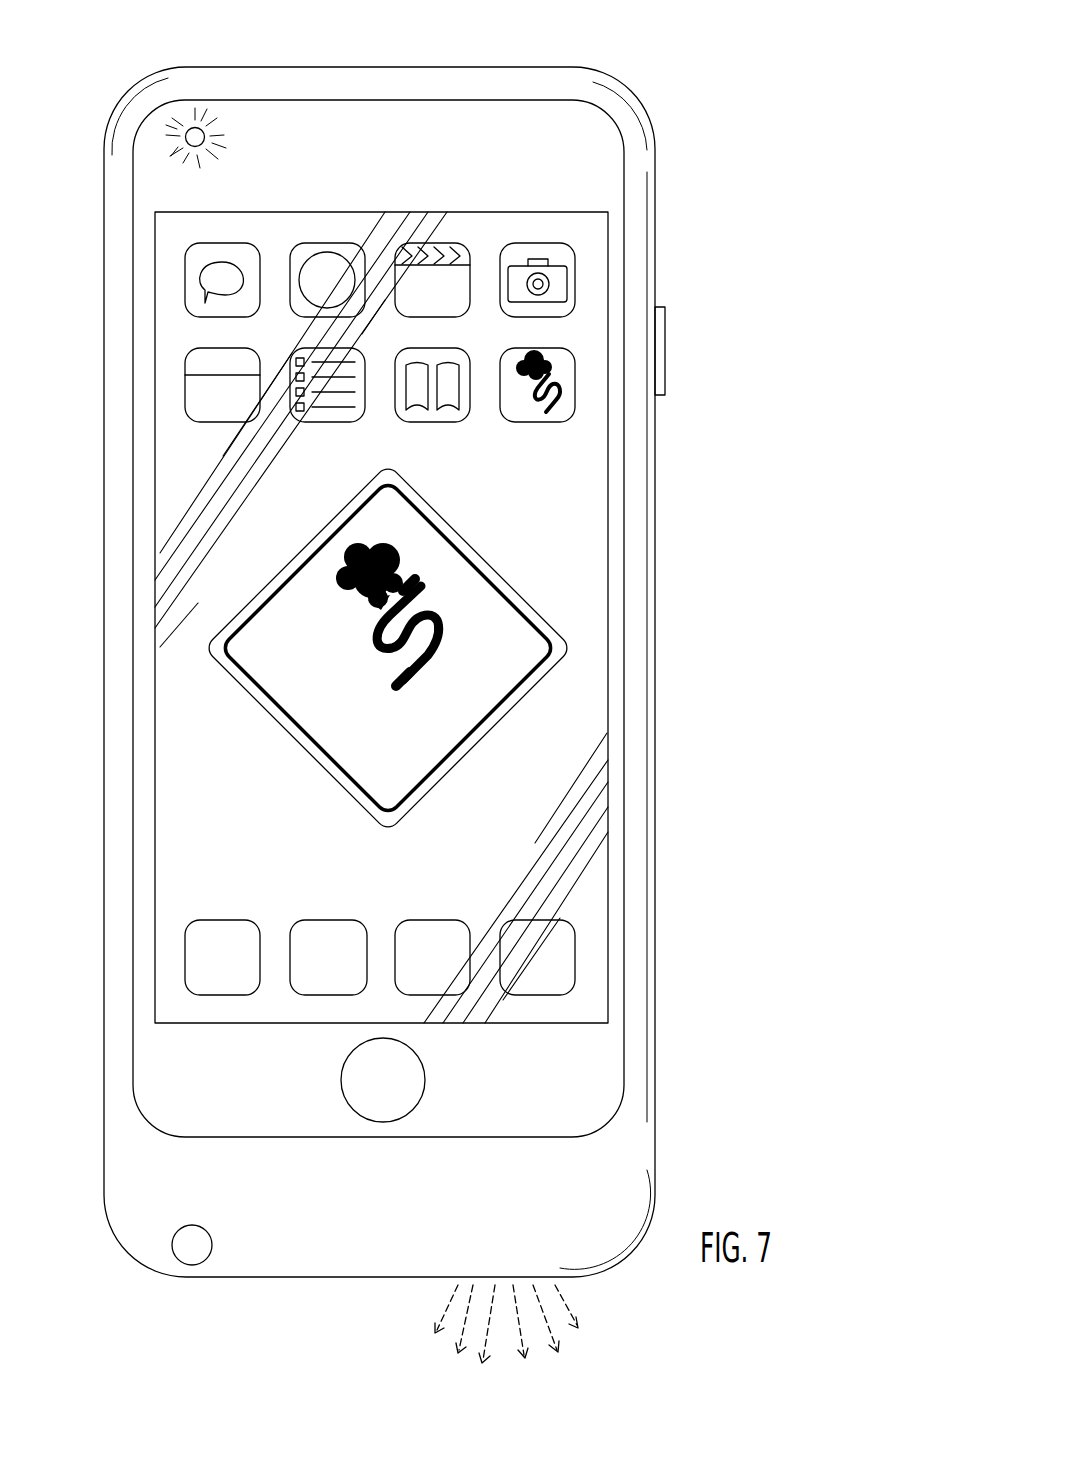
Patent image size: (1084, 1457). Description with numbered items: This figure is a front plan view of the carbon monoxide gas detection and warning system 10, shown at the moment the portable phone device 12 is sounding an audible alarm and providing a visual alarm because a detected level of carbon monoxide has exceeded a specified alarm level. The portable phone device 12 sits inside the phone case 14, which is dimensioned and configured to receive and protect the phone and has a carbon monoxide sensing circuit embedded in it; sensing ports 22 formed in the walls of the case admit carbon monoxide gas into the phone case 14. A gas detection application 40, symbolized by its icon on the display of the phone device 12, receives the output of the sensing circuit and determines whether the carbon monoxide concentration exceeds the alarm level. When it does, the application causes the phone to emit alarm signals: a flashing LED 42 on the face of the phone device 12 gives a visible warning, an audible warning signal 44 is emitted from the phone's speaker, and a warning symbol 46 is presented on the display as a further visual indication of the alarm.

The carbon monoxide gas detection and warning system 10 is at (672, 78).
The portable phone device 12 is at (492, 212).
The phone case 14 is at (648, 1117).
The sensing port 22 is at (189, 1250).
The gas detection application 40 is at (561, 356).
The flashing LED 42 is at (196, 133).
The audible warning signal 44 is at (565, 1304).
The warning symbol 46 is at (487, 560).